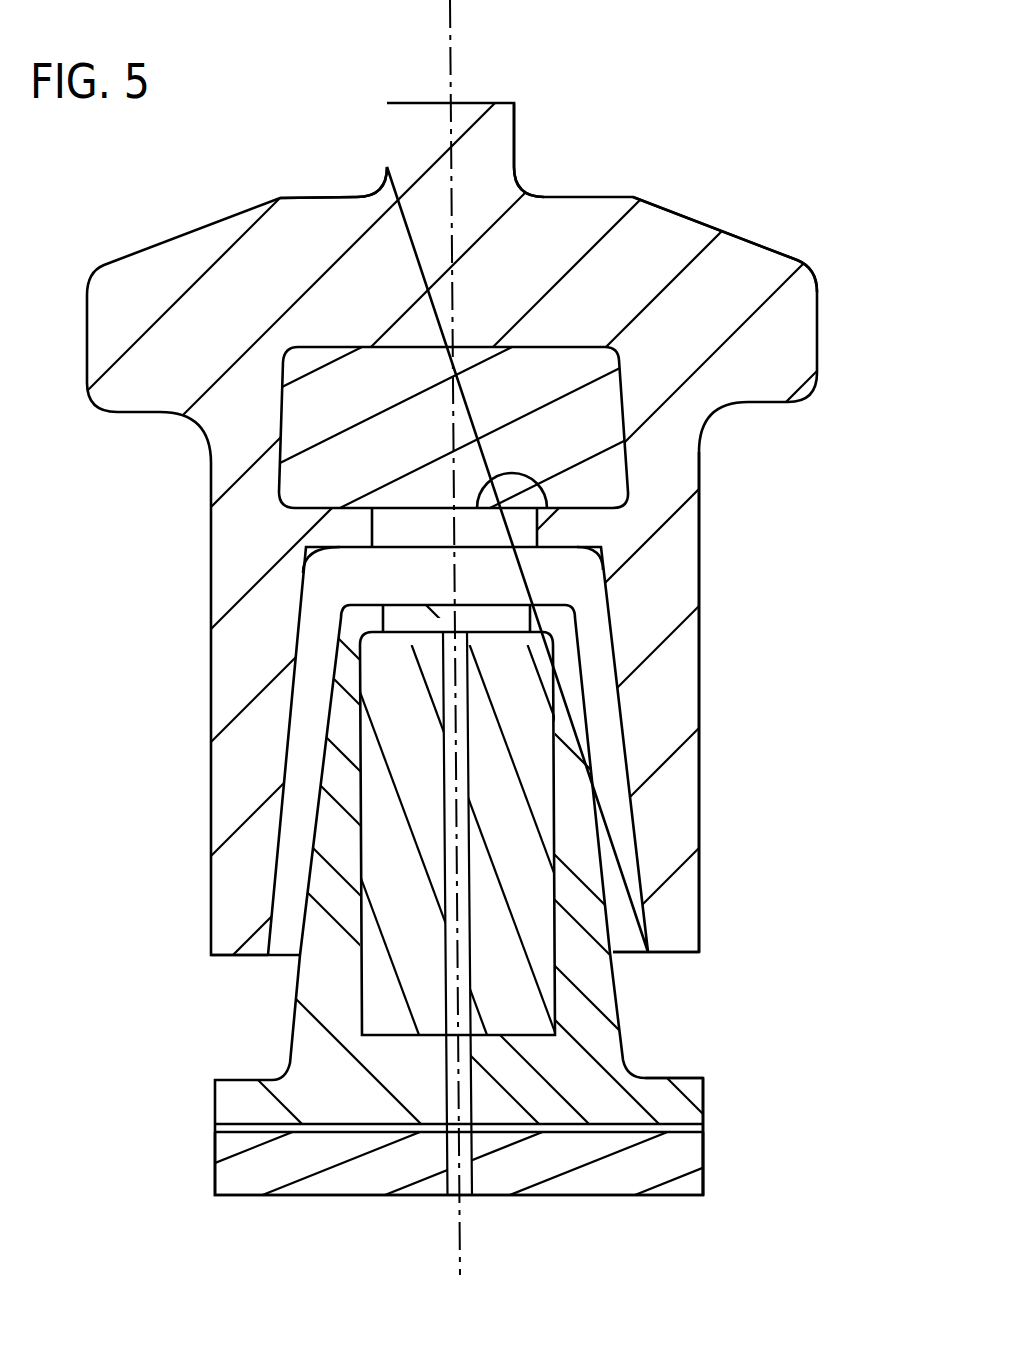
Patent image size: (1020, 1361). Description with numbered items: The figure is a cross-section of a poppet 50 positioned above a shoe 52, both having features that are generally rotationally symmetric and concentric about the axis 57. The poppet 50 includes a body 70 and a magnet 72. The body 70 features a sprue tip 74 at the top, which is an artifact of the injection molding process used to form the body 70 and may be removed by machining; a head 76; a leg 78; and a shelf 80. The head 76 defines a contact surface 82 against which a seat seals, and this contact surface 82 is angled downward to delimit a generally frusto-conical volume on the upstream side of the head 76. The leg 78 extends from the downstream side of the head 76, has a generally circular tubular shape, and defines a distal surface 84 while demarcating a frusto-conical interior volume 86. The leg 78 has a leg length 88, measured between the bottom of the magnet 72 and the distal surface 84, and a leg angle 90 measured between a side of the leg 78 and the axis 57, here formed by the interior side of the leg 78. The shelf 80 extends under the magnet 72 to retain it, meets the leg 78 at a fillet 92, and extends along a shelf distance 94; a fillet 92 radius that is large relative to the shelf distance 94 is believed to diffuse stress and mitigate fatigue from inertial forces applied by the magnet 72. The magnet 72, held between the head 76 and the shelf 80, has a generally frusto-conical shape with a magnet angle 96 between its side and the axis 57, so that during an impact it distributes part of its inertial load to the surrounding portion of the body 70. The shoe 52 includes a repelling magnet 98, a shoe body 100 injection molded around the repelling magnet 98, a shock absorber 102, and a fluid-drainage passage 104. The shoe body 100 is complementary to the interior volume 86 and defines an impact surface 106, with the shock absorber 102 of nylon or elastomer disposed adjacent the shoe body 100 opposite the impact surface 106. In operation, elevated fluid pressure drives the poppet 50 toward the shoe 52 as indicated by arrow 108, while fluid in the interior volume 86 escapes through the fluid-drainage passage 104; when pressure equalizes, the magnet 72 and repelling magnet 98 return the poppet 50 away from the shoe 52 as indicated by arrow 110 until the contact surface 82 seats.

The poppet 50 is at (842, 313).
The shoe 52 is at (750, 1103).
The axis 57 is at (456, 43).
The body 70 is at (312, 190).
The magnet 72 is at (401, 518).
The sprue tip 74 is at (517, 137).
The head 76 is at (681, 213).
The leg 78 is at (703, 663).
The shelf 80 is at (450, 415).
The contact surface 82 is at (742, 237).
The distal surface 84 is at (227, 957).
The interior volume 86 is at (628, 942).
The leg length 88 is at (712, 507).
The leg angle 90 is at (646, 923).
The fillet 92 is at (507, 549).
The shelf distance 94 is at (282, 497).
The magnet angle 96 is at (617, 363).
The repelling magnet 98 is at (480, 618).
The shoe body 100 is at (213, 1103).
The shock absorber 102 is at (604, 1196).
The fluid-drainage passage 104 is at (463, 1197).
The impact surface 106 is at (672, 1078).
The arrow 108 is at (162, 667).
The arrow 110 is at (162, 545).